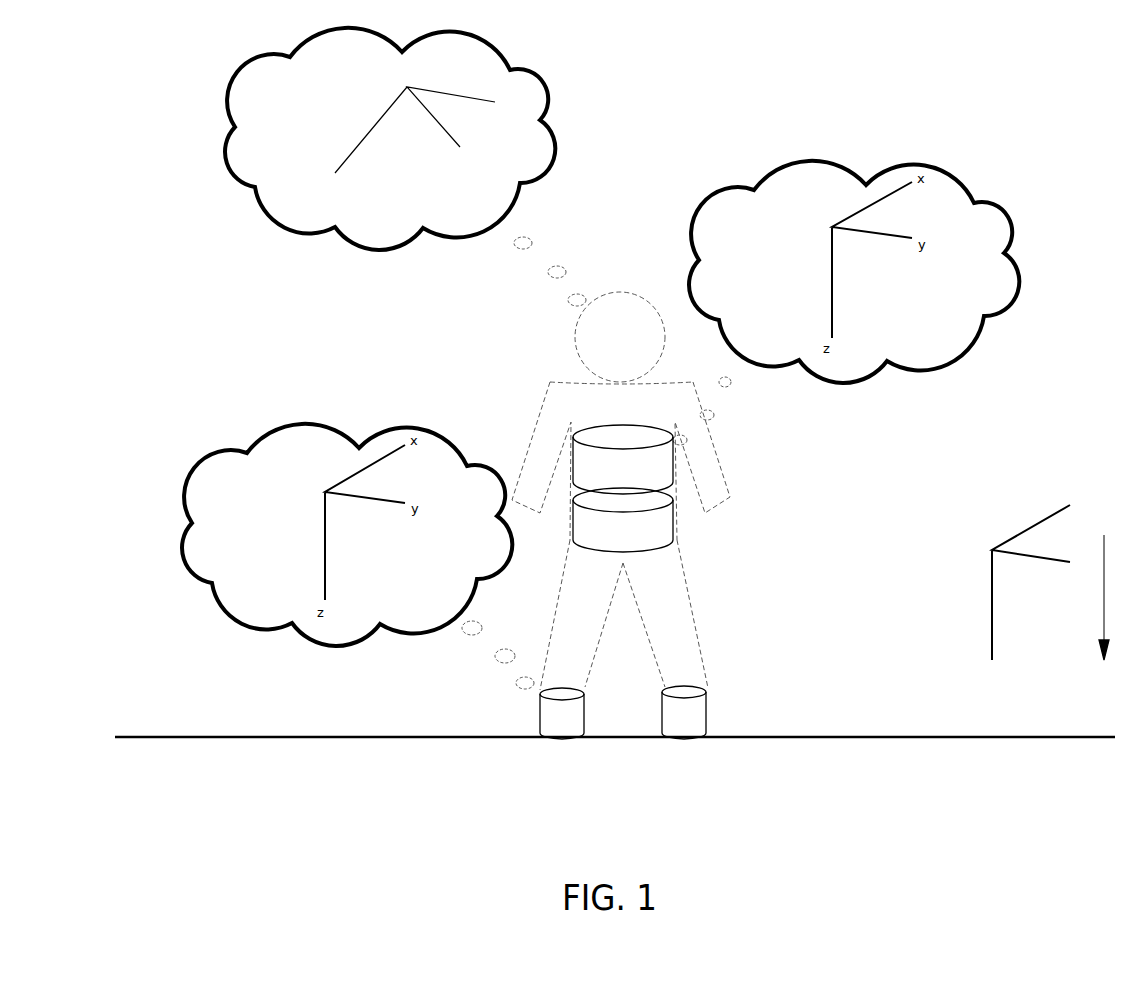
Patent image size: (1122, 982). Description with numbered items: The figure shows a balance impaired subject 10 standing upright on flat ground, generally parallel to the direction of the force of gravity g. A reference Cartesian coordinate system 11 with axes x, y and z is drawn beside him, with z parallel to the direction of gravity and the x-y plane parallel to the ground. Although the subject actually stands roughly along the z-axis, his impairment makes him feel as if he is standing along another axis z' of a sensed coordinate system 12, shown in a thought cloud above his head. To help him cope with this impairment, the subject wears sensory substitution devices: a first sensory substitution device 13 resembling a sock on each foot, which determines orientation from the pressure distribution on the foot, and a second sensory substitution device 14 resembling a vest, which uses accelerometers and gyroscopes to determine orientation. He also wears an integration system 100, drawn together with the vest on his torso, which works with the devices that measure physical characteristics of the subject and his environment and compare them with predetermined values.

The balance impaired subject 10 is at (565, 402).
The reference Cartesian coordinate system 11 is at (978, 530).
The sensed coordinate system 12 is at (390, 86).
The first sensory substitution device 13 is at (623, 712).
The second sensory substitution device 14 is at (623, 459).
The integration system 100 is at (623, 520).